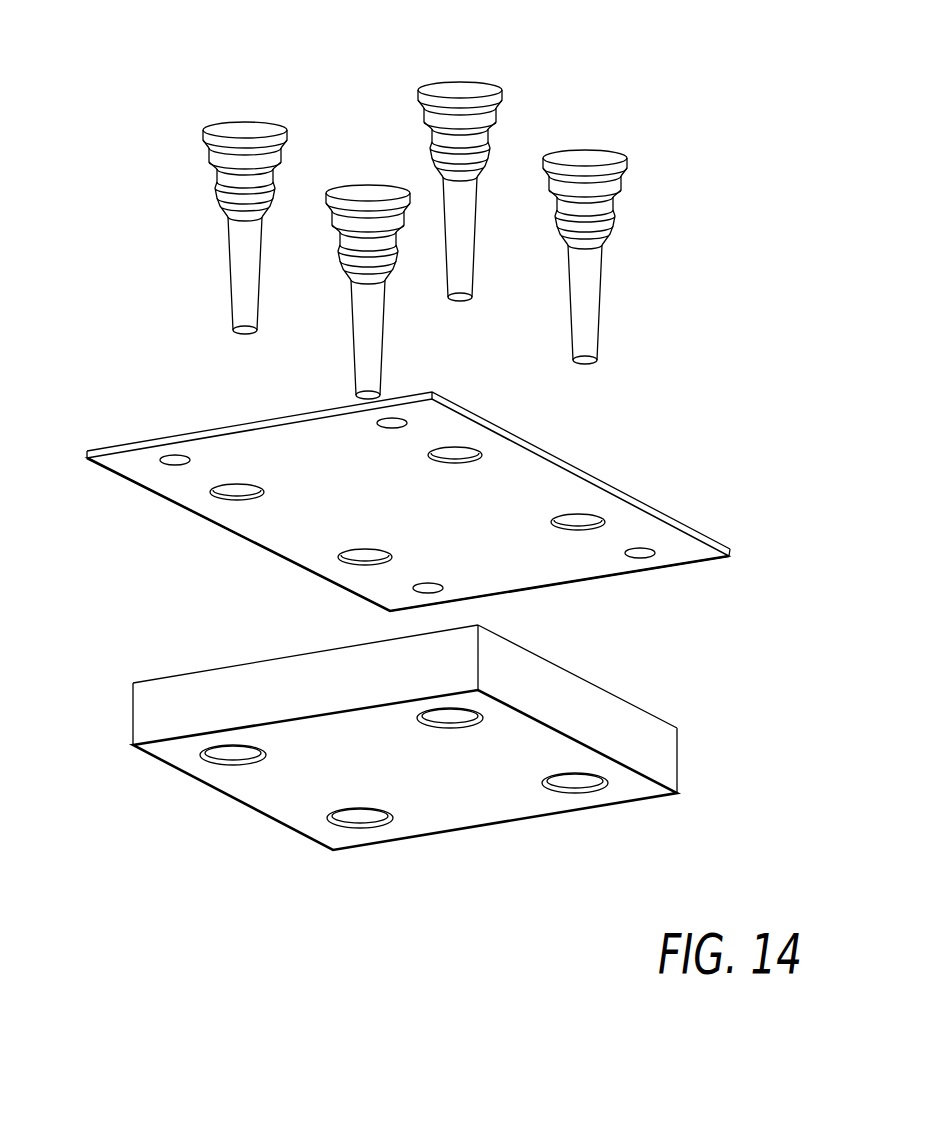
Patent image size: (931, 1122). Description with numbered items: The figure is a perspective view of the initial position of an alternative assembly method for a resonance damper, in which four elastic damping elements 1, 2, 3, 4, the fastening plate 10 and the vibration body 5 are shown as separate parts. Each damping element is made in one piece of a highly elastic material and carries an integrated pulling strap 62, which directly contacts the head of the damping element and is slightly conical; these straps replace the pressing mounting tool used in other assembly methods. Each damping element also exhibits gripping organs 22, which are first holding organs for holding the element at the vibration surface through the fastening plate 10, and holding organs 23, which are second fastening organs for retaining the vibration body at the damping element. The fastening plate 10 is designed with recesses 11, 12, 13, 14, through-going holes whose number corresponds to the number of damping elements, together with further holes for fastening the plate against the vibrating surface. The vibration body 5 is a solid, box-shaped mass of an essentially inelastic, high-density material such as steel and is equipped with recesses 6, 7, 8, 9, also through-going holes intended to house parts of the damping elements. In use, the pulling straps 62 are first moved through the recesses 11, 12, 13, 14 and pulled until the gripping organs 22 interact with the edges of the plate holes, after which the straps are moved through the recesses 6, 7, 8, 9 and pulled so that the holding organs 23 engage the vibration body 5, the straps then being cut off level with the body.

The elastic damping element 1 is at (490, 135).
The elastic damping element 2 is at (182, 228).
The elastic damping element 3 is at (332, 292).
The elastic damping element 4 is at (625, 230).
The gripping organ 22 is at (203, 148).
The holding organ 23 is at (199, 194).
The pulling strap 62 is at (229, 293).
The fastening plate 10 is at (386, 504).
The recess of fastening plate 11 is at (463, 452).
The recess of fastening plate 12 is at (240, 490).
The recess of fastening plate 13 is at (363, 555).
The recess of fastening plate 14 is at (580, 518).
The vibration body 5 is at (379, 751).
The recess of vibration body 6 is at (455, 715).
The recess of vibration body 7 is at (233, 755).
The recess of vibration body 8 is at (358, 818).
The recess of vibration body 9 is at (575, 783).